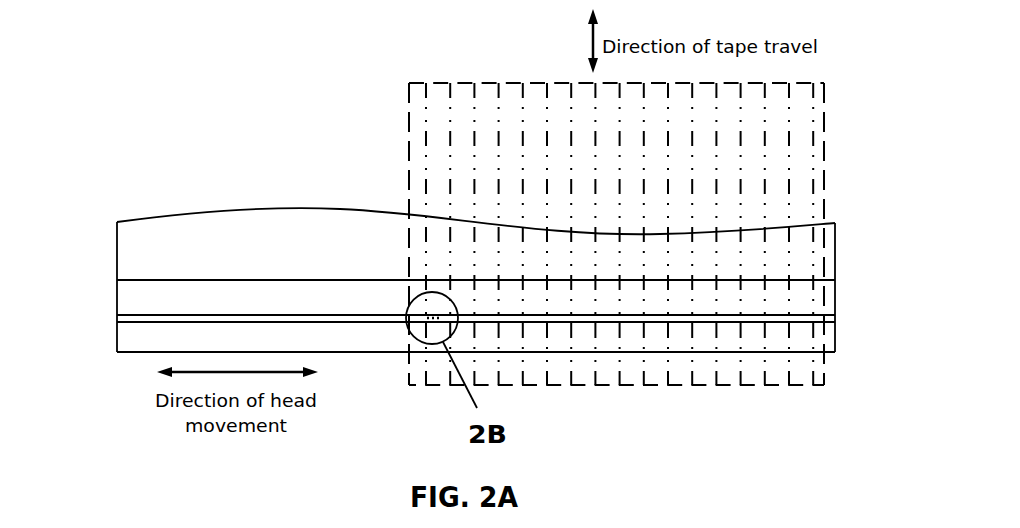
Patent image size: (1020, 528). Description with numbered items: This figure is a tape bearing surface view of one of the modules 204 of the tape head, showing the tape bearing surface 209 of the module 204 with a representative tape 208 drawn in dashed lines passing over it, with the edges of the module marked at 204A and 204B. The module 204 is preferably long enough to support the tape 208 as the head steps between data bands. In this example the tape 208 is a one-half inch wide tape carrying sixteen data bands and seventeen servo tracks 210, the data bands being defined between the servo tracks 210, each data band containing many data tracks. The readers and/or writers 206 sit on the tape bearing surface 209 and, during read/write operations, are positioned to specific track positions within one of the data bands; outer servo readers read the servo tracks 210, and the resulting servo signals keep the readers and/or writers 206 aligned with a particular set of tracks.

The module 204 is at (428, 243).
The head top edge / skiving edge 204A is at (254, 208).
The head bottom edge 204B is at (117, 340).
The readers and/or writers 206 is at (400, 316).
The tape 208 is at (405, 87).
The tape bearing surface 209 is at (313, 300).
The servo tracks 210 is at (520, 168).